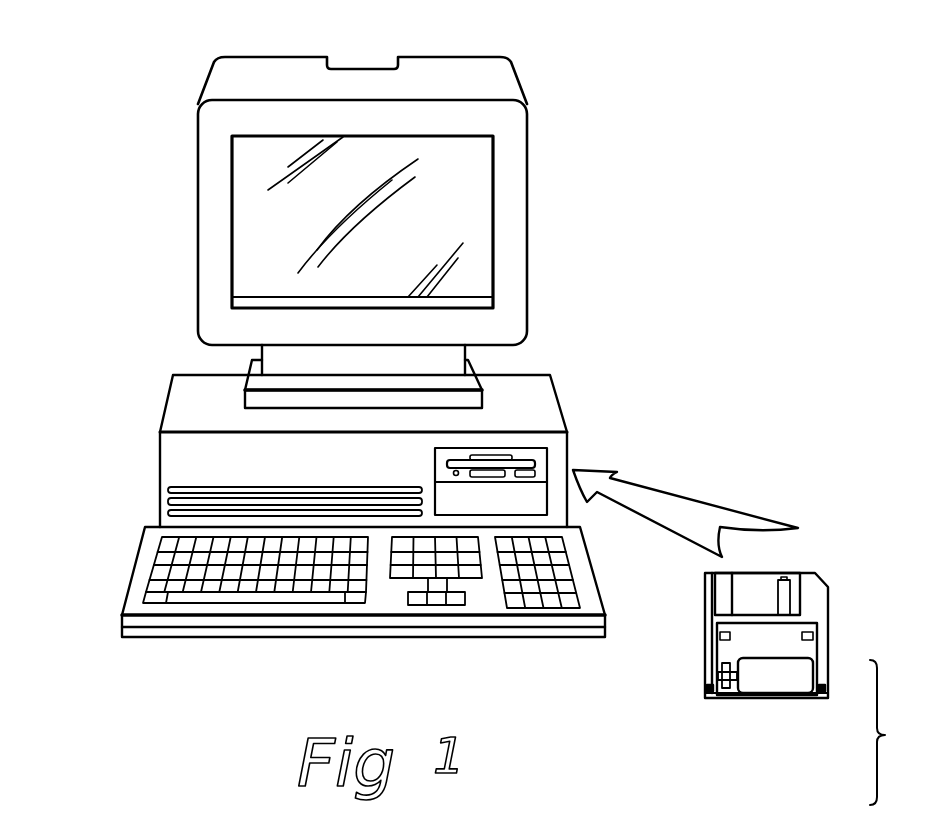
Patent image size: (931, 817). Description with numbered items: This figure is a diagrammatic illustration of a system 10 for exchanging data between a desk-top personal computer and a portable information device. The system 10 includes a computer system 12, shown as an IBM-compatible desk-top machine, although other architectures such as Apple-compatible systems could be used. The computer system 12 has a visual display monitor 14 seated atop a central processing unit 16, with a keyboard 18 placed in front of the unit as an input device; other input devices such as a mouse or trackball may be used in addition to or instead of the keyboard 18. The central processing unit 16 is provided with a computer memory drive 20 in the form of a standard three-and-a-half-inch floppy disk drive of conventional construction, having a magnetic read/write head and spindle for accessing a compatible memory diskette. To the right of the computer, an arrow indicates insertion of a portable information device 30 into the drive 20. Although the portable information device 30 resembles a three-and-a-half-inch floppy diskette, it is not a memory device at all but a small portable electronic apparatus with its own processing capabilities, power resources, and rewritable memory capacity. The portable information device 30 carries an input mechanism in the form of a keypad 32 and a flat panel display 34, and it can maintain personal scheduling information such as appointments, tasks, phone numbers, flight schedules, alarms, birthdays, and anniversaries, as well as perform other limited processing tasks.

The system 10 is at (674, 219).
The computer system 12 is at (135, 316).
The visual display monitor 14 is at (527, 198).
The central processing unit 16 is at (160, 465).
The keyboard 18 is at (385, 605).
The computer memory drive 20 is at (528, 452).
The portable information device 30 is at (765, 645).
The keypad 32 is at (720, 640).
The flat panel display 34 is at (758, 688).